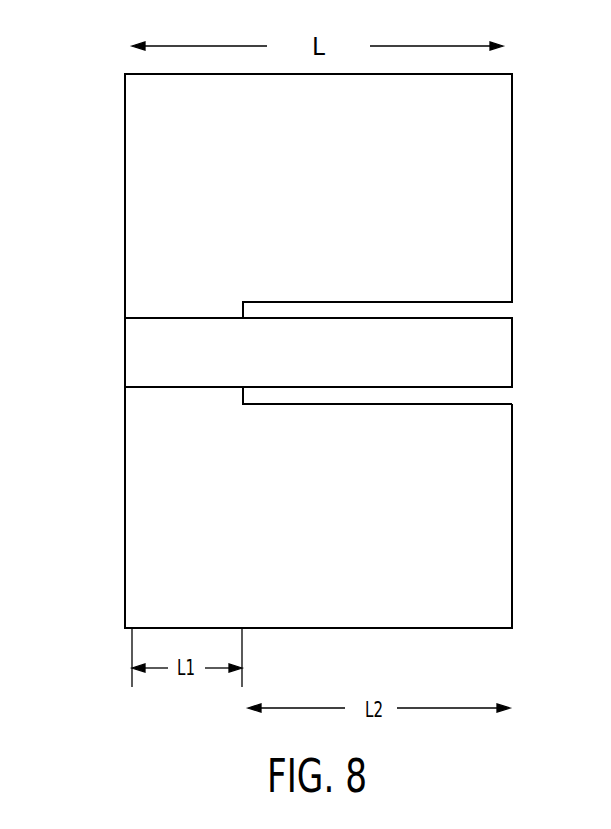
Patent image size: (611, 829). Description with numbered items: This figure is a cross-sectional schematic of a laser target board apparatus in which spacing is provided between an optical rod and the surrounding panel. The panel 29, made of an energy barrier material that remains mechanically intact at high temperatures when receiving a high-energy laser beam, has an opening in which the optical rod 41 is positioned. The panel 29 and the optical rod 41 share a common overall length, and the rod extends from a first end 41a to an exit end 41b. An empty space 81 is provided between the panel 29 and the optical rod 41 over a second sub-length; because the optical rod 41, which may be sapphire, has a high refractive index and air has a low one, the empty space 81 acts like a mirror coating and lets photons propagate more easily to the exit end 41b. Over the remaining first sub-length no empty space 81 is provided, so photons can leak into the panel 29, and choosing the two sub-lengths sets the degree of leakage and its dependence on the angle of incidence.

The panel 29 is at (503, 591).
The optical rod 41 is at (135, 379).
The entrance end of the optical rod 41a is at (113, 349).
The exit end of the optical rod 41b is at (526, 357).
The empty space 81 is at (502, 395).